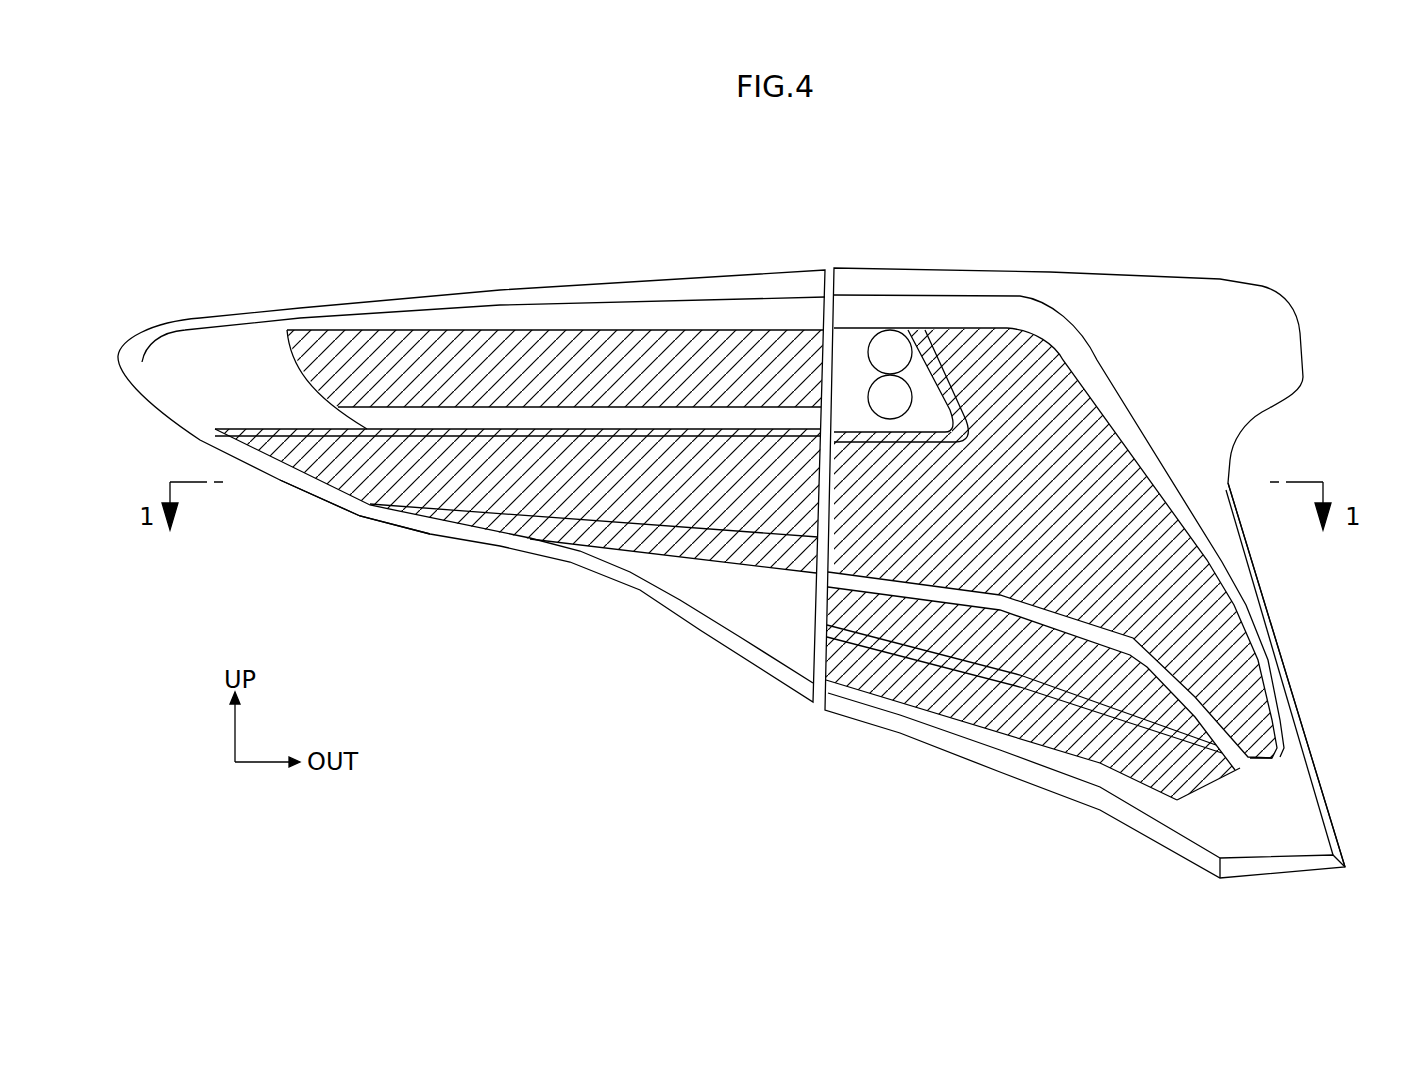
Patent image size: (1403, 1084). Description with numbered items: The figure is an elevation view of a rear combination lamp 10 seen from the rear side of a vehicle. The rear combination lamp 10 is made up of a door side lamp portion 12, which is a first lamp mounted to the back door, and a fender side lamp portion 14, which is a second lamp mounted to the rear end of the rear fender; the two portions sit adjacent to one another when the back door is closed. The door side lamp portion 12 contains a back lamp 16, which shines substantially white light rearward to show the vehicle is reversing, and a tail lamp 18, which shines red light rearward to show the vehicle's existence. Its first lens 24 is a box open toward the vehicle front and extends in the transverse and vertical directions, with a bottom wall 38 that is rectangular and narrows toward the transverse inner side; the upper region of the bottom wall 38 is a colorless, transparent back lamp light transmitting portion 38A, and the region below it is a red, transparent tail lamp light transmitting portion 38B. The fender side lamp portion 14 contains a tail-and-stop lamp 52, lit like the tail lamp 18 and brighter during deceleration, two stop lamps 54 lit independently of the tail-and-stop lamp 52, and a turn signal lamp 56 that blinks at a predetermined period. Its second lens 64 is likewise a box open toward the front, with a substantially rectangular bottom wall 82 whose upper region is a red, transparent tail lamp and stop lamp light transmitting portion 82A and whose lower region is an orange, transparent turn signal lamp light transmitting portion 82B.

The rear combination lamp 10 is at (712, 182).
The door side lamp portion 12 is at (737, 270).
The fender side lamp portion 14 is at (860, 260).
The back lamp 16 is at (425, 330).
The tail lamp 18 is at (677, 553).
The first lens 24 is at (350, 513).
The bottom wall 38 is at (519, 420).
The back lamp light transmitting portion 38A is at (532, 332).
The tail lamp light transmitting portion 38B is at (517, 490).
The tail-and-stop lamp 52 is at (1100, 369).
The stop lamps 54 is at (964, 410).
The turn signal lamp 56 is at (1024, 738).
The second lens 64 is at (1112, 348).
The bottom wall 82 is at (1106, 486).
The tail lamp and stop lamp light transmitting portion 82A is at (880, 397).
The turn signal lamp light transmitting portion 82B is at (933, 690).